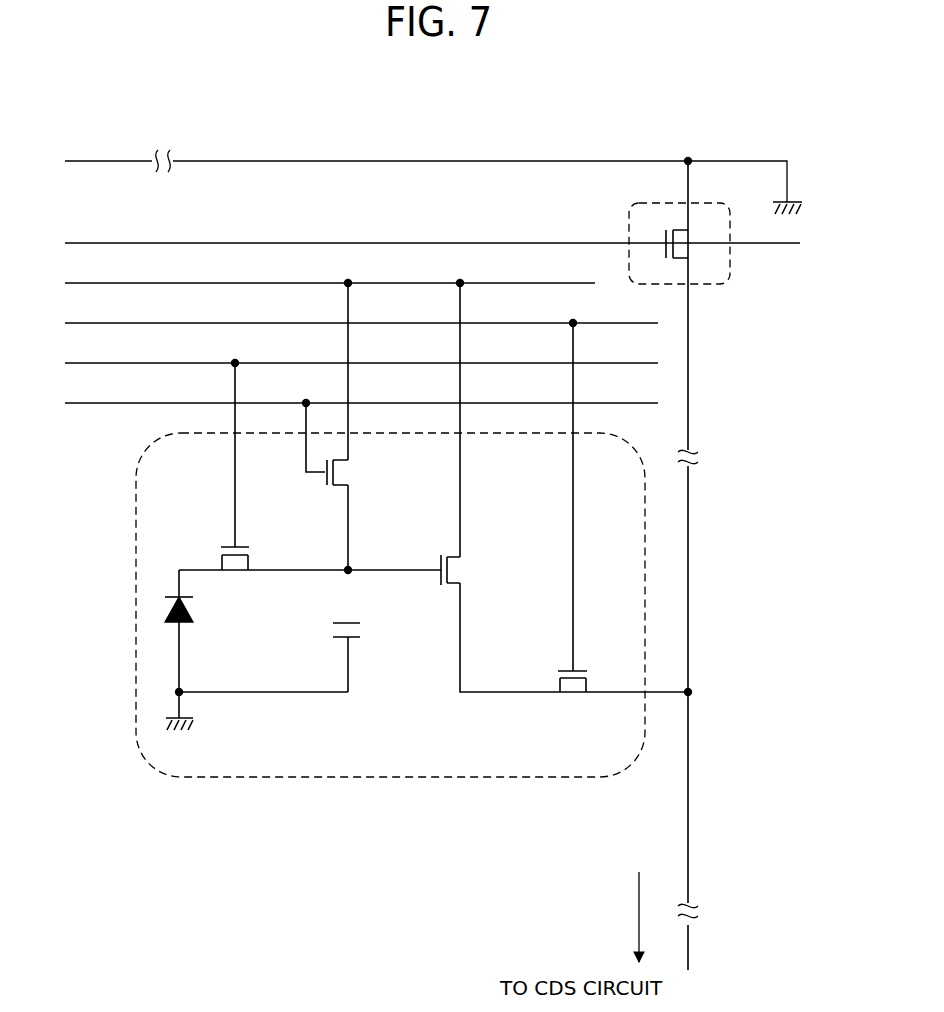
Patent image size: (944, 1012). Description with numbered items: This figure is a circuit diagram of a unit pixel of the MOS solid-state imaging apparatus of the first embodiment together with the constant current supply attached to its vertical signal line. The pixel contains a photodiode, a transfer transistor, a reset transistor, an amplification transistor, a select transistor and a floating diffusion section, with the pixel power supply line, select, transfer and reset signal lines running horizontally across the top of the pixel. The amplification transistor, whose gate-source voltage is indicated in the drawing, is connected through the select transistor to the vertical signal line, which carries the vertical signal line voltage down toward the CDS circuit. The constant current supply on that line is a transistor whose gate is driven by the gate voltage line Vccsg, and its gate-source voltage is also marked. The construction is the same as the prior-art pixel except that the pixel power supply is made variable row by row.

The gate voltage line Vccsg is at (432, 231).